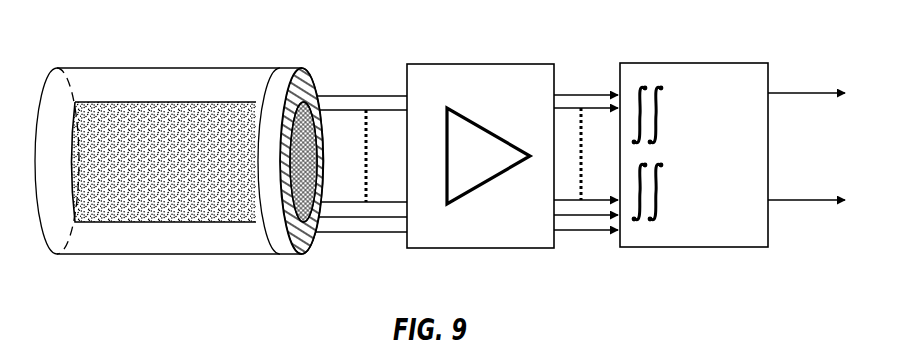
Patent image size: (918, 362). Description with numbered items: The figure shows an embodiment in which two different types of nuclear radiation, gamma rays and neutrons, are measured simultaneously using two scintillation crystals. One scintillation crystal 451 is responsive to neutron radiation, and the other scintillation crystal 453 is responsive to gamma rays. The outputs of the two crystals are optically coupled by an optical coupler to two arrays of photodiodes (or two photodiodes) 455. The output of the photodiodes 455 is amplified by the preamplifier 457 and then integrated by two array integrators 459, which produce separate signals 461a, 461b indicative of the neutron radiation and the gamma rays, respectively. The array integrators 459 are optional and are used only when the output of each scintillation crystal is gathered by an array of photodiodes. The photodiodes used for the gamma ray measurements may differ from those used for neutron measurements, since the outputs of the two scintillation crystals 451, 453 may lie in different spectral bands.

The scintillation crystal 451 is at (108, 77).
The scintillation crystal 453 is at (199, 122).
The arrays of photodiodes 455 is at (281, 77).
The preamplifier 457 is at (477, 75).
The array integrators 459 is at (688, 73).
The signal 461a is at (778, 93).
The signal 461b is at (777, 200).